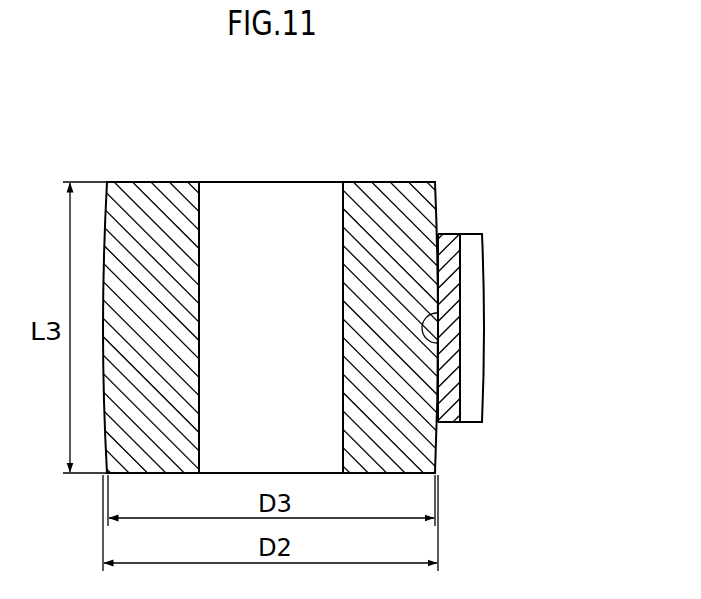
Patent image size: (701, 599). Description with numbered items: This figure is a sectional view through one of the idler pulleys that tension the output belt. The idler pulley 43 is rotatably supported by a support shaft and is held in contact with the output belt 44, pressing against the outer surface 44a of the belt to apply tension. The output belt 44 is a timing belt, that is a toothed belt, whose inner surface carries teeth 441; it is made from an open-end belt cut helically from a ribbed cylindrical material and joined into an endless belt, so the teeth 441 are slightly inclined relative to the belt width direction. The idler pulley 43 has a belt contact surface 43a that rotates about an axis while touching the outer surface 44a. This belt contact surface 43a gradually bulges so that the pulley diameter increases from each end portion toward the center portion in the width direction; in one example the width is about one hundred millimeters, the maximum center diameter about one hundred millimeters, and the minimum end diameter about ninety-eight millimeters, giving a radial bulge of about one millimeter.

The idler pulley 43 is at (392, 179).
The belt contact surface 43a is at (438, 373).
The output belt 44 is at (486, 259).
The teeth 441 is at (478, 300).
The outer surface 44a is at (437, 343).